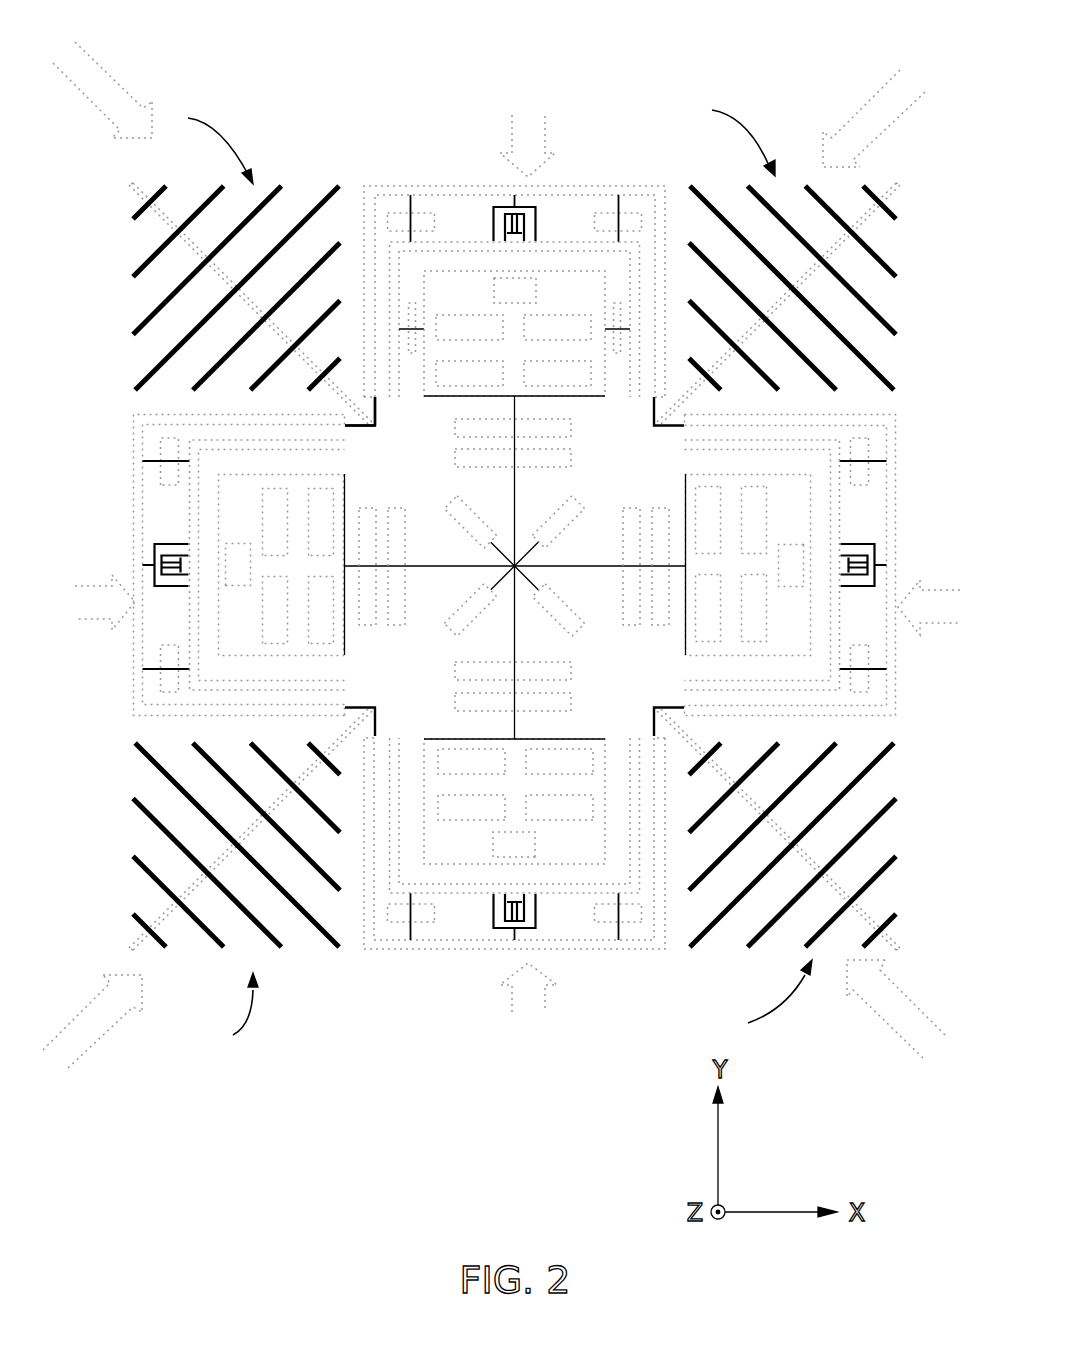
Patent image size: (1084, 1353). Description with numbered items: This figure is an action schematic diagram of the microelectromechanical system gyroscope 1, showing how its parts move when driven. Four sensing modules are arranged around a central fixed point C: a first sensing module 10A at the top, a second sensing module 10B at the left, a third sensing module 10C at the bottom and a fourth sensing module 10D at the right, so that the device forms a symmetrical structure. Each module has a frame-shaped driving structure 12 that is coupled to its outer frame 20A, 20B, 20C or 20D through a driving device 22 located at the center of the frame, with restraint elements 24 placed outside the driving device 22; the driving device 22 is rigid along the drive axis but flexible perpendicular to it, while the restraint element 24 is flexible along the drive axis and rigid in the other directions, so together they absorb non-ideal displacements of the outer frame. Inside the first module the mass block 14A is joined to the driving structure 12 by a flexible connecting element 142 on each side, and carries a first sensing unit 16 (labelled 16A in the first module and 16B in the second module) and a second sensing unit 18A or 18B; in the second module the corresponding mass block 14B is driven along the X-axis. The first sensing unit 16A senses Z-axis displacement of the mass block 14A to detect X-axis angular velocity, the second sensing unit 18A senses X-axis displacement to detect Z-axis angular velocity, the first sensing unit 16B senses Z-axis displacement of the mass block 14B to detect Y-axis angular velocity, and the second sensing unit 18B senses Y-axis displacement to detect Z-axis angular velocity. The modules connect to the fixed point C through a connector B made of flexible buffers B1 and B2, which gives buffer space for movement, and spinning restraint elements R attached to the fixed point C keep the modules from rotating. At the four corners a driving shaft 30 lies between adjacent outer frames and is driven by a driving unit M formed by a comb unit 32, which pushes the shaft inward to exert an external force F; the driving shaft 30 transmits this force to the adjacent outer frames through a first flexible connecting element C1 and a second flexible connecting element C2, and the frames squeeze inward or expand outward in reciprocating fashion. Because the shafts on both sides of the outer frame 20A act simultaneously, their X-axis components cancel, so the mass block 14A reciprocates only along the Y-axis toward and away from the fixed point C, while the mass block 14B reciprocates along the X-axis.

The microelectromechanical system gyroscope 1 is at (920, 31).
The first sensing module 10A is at (513, 237).
The second sensing module 10B is at (205, 554).
The third sensing module 10C is at (514, 896).
The fourth sensing module 10D is at (823, 597).
The driving structure 12 is at (480, 241).
The mass block 14A is at (507, 297).
The mass block 14B is at (242, 524).
The flexible connecting element 142 is at (408, 315).
The first sensing unit 16 is at (558, 315).
The first sensing unit 16A is at (437, 326).
The first sensing unit 16B is at (278, 487).
The second sensing unit 18A is at (513, 278).
The second sensing unit 18B is at (240, 585).
The outer frame 20A is at (575, 187).
The outer frame 20B is at (133, 655).
The outer frame 20C is at (625, 950).
The outer frame 20D is at (897, 680).
The driving device 22 is at (500, 207).
The restraint element 24 is at (403, 212).
The driving shaft 30 is at (485, 543).
The comb unit 32 is at (135, 218).
The connector B is at (514, 562).
The flexible buffer B1 is at (572, 424).
The flexible buffer B2 is at (572, 460).
The fixed point C is at (500, 563).
The first flexible connecting element C1 is at (376, 402).
The second flexible connecting element C2 is at (353, 427).
The spinning restraint element R is at (453, 498).
The external force F is at (102, 68).
The driving unit M is at (487, 578).